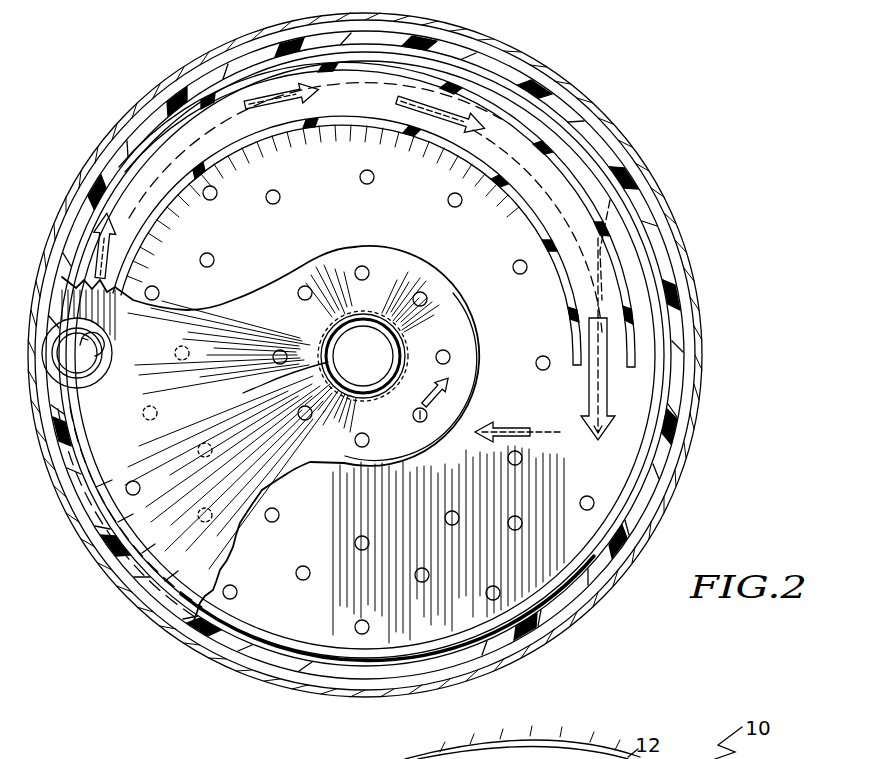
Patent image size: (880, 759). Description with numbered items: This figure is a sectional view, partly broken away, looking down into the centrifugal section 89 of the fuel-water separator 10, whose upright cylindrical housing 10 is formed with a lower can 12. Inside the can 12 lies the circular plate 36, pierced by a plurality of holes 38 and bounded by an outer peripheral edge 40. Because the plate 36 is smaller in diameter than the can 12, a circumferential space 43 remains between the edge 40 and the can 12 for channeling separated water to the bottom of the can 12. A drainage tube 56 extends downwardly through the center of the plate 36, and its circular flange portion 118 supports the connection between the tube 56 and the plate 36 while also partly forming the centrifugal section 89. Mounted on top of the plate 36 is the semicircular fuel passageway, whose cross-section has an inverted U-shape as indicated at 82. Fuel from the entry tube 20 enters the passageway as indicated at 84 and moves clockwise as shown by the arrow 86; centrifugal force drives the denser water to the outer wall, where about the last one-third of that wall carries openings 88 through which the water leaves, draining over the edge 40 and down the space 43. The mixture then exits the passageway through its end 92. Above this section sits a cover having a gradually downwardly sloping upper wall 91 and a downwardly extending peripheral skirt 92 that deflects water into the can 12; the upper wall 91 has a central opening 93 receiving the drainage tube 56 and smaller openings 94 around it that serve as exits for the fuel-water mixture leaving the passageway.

The housing 10 is at (716, 161).
The can portion 12 is at (103, 575).
The tube 20 is at (97, 380).
The circular plate 36 is at (613, 495).
The holes 38 is at (458, 207).
The outer peripheral edge 40 is at (652, 440).
The circumferential space 43 is at (677, 376).
The drainage tube 56 is at (270, 391).
The inverted U-shaped cross-section of the passageway 82 is at (432, 67).
The fuel entry into passageway 84 is at (92, 340).
The arrow indicating fuel flow 86 is at (194, 126).
The openings 88 is at (577, 150).
The centrifugal section 89 is at (270, 564).
The upper wall 91 is at (107, 487).
The peripheral skirt 92 is at (630, 368).
The central opening 93 is at (410, 399).
The smaller openings 94 is at (447, 354).
The circular flange portion 118 is at (455, 312).